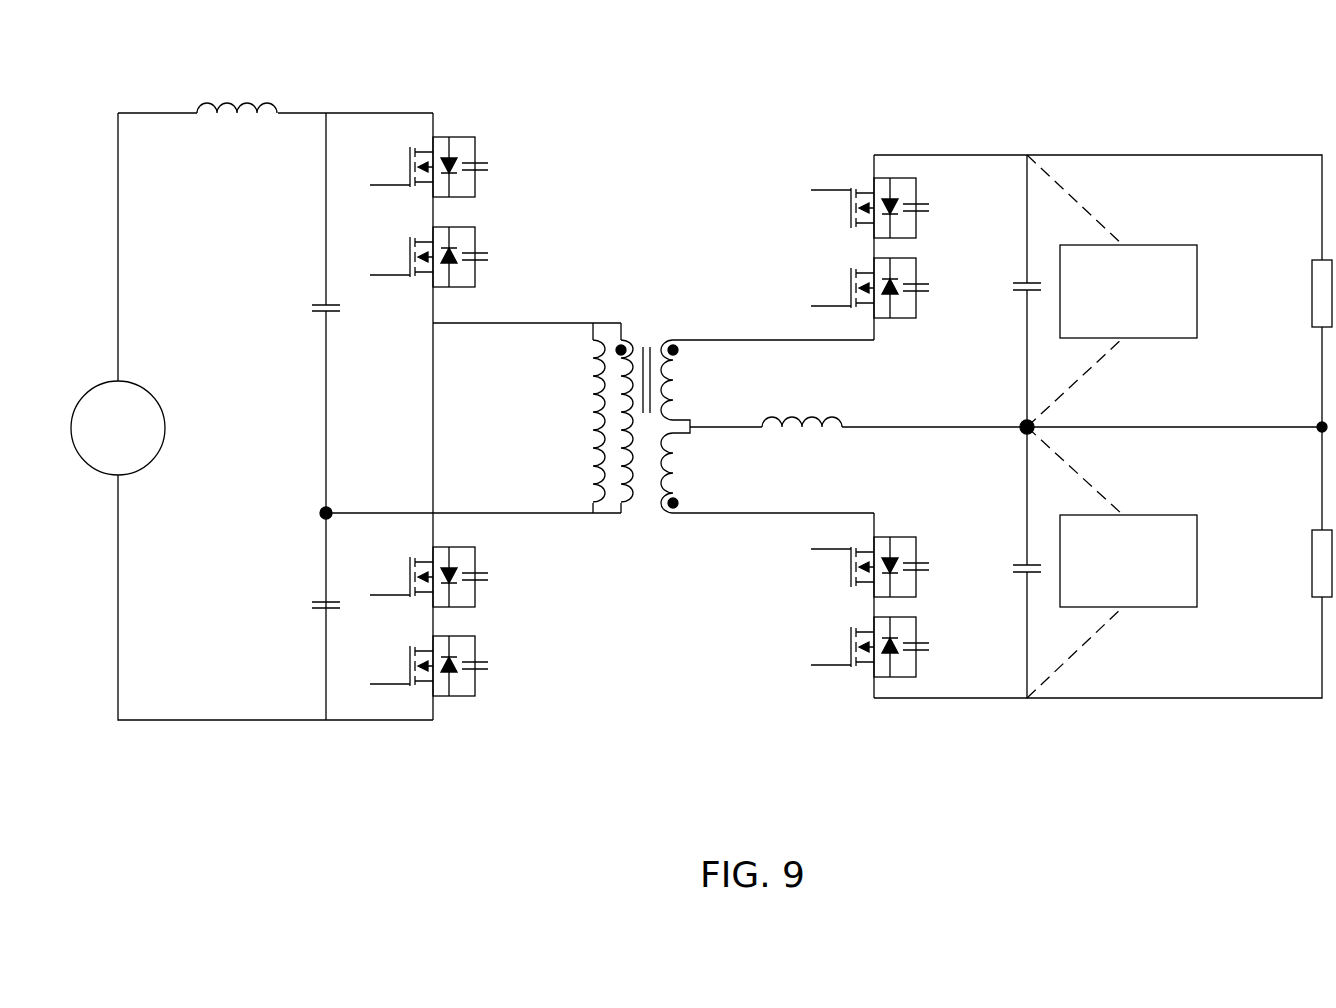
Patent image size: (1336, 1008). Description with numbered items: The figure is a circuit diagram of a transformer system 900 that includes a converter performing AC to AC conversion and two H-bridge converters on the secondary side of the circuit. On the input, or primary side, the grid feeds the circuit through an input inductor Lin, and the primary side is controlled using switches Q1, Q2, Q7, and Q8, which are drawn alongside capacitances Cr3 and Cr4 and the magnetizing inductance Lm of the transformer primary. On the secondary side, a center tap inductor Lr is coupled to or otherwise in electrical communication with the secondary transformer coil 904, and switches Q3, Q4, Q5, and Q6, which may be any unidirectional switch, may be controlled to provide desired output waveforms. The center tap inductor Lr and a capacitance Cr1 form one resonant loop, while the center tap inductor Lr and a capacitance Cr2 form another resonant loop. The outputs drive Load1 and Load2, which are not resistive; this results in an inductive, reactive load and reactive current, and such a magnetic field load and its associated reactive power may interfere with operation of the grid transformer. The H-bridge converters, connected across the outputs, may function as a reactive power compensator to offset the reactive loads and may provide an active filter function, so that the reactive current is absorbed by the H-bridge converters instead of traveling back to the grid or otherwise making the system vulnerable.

The transformer system 900 is at (1180, 95).
The secondary transformer coil 904 is at (665, 522).
The switch Q1 is at (429, 167).
The switch Q2 is at (429, 257).
The switch Q3 is at (870, 198).
The switch Q4 is at (870, 288).
The switch Q5 is at (870, 560).
The switch Q6 is at (870, 647).
The switch Q7 is at (429, 577).
The switch Q8 is at (429, 666).
The capacitance Cr1 is at (1006, 276).
The capacitance Cr2 is at (1006, 549).
The resonant capacitor Cr3 is at (305, 295).
The resonant capacitor Cr4 is at (305, 586).
The input inductor Lin is at (237, 91).
The magnetizing inductance Lm is at (579, 421).
The center tap inductor Lr is at (802, 405).
The load Load1 is at (1283, 293).
The load Load2 is at (1284, 563).